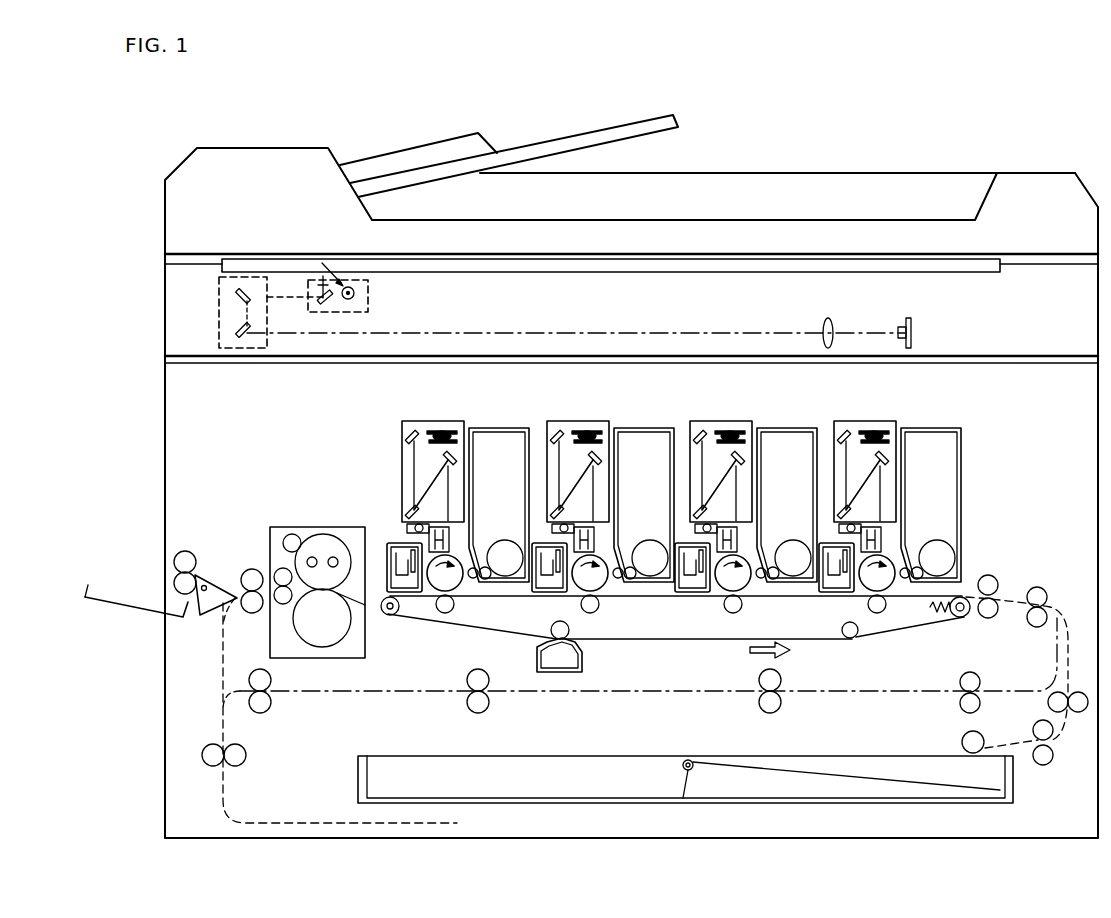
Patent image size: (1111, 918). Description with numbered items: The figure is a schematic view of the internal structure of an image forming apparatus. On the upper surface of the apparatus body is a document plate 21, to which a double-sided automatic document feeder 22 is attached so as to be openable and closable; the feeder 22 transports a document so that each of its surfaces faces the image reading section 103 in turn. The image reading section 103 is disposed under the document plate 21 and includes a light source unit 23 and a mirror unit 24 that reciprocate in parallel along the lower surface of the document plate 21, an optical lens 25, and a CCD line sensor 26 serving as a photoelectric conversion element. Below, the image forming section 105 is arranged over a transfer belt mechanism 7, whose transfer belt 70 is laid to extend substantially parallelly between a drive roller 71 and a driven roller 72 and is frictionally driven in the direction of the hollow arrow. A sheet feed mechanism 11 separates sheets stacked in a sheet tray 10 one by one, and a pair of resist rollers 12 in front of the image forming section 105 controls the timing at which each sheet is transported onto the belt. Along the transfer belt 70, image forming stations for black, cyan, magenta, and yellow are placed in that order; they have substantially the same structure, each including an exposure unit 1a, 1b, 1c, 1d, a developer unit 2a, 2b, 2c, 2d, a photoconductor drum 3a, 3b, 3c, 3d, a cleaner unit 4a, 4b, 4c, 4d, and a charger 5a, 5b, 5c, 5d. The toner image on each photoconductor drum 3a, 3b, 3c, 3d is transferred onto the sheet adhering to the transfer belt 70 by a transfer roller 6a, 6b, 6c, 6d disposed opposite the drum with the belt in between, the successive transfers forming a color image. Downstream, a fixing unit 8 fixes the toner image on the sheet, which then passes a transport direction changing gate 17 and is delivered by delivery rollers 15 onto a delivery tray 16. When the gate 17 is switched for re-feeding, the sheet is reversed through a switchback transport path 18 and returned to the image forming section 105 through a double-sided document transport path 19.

The exposure unit 1a is at (865, 447).
The exposure unit 1b is at (721, 448).
The exposure unit 1c is at (578, 448).
The exposure unit 1d is at (435, 452).
The developer unit 2a is at (931, 482).
The developer unit 2b is at (786, 479).
The developer unit 2c is at (643, 480).
The developer unit 2d is at (498, 479).
The photoconductor drum 3a is at (902, 605).
The photoconductor drum 3b is at (751, 593).
The photoconductor drum 3c is at (606, 593).
The photoconductor drum 3d is at (468, 590).
The cleaner unit 4a is at (814, 550).
The cleaner unit 4b is at (670, 550).
The cleaner unit 4c is at (527, 550).
The cleaner unit 4d is at (390, 537).
The charger 5a is at (836, 464).
The charger 5b is at (693, 463).
The charger 5c is at (548, 463).
The charger 5d is at (397, 489).
The transfer roller 6a is at (850, 606).
The transfer roller 6b is at (710, 611).
The transfer roller 6c is at (570, 637).
The transfer roller 6d is at (447, 623).
The transfer belt mechanism 7 is at (693, 599).
The transfer belt 70 is at (672, 638).
The drive roller 71 is at (390, 616).
The driven roller 72 is at (963, 597).
The fixing unit 8 is at (300, 527).
The sheet tray 10 is at (850, 805).
The sheet feed mechanism 11 is at (961, 742).
The pair of resist rollers 12 is at (996, 579).
The delivery rollers 15 is at (188, 550).
The delivery tray 16 is at (110, 602).
The transport direction changing gate 17 is at (205, 612).
The switchback transport path 18 is at (257, 812).
The double-sided document transport path 19 is at (293, 693).
The document plate 21 is at (735, 262).
The double-sided automatic document feeder 22 is at (285, 185).
The light source unit 23 is at (372, 296).
The mirror unit 24 is at (219, 305).
The optical lens 25 is at (823, 322).
The CCD line sensor 26 is at (918, 330).
The image reading section 103 is at (370, 337).
The image forming section 105 is at (338, 470).